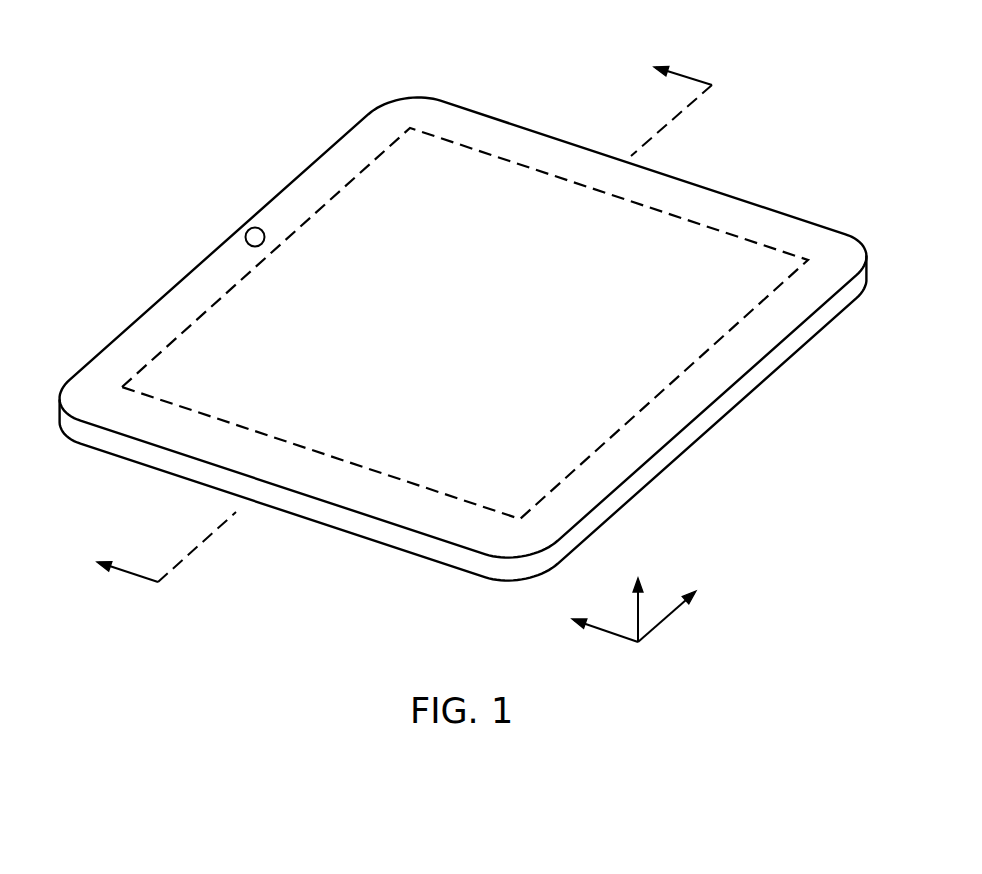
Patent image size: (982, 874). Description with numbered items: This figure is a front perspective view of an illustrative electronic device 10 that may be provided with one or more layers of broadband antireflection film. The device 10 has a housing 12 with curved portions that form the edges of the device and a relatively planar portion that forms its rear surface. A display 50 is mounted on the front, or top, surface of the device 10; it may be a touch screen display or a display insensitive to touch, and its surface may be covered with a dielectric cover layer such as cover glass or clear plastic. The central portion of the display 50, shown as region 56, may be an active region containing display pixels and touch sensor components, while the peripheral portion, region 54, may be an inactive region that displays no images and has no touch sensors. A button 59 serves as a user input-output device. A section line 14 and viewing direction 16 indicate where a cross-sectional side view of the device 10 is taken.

The electronic device 10 is at (762, 99).
The housing 12 is at (563, 138).
The line 14 is at (665, 128).
The direction 16 is at (680, 70).
The display 50 is at (485, 188).
The region 54 is at (455, 127).
The region 56 is at (752, 238).
The button 59 is at (252, 227).